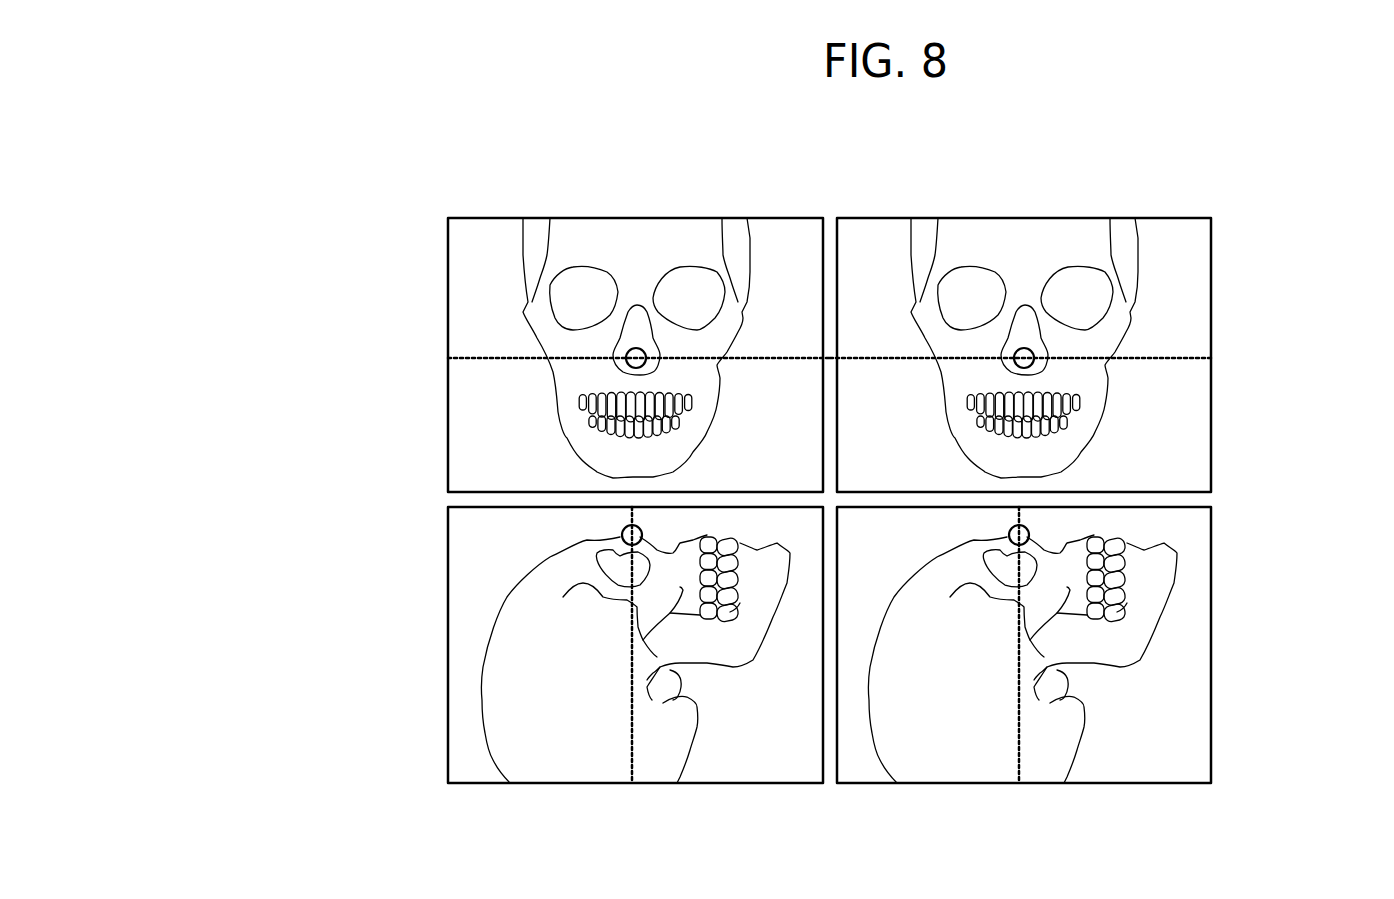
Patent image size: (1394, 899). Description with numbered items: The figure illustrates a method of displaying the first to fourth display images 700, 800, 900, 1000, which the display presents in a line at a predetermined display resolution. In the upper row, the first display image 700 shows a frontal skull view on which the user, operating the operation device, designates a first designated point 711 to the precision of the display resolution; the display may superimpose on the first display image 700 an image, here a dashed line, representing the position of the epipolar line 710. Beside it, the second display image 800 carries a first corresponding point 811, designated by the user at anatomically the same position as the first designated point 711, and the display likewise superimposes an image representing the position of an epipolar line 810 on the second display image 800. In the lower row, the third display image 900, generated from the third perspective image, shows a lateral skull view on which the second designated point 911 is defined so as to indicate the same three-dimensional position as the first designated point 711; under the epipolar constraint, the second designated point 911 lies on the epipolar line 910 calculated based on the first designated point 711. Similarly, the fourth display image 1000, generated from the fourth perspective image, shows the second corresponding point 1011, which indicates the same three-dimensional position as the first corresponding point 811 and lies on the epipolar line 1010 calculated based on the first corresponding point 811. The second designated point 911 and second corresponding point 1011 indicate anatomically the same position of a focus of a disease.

The first display image 700 is at (621, 214).
The epipolar line 710 is at (483, 355).
The first designated point 711 is at (627, 365).
The second display image 800 is at (1009, 214).
The epipolar line 810 is at (1170, 360).
The first corresponding point 811 is at (1033, 352).
The third display image 900 is at (698, 792).
The epipolar line 910 is at (632, 724).
The second designated point 911 is at (622, 535).
The fourth display image 1000 is at (1088, 792).
The epipolar line 1010 is at (1019, 745).
The second corresponding point 1011 is at (1031, 531).